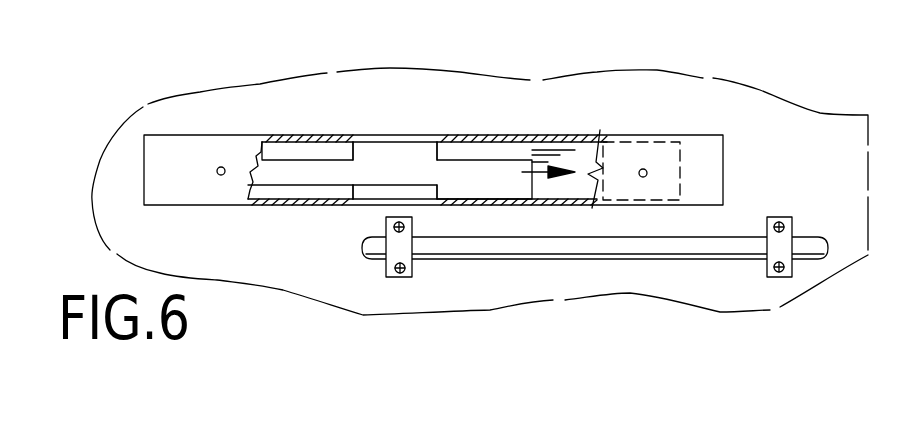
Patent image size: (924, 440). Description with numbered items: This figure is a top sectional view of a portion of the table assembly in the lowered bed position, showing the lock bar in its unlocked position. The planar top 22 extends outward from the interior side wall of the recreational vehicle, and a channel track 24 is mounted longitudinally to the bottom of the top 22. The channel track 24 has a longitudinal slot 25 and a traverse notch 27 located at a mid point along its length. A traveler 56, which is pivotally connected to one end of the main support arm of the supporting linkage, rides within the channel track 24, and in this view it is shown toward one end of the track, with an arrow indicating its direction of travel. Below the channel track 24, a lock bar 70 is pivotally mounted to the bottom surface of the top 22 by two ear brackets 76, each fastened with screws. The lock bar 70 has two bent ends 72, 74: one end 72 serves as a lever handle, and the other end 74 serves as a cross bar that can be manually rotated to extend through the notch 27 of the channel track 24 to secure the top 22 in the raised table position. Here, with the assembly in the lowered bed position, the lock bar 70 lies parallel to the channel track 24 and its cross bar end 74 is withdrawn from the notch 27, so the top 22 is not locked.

The planar top 22 is at (665, 100).
The channel track 24 is at (403, 137).
The longitudinal slot 25 is at (490, 172).
The traverse notch 27 is at (407, 188).
The traveler 56 is at (577, 165).
The lock bar 70 is at (608, 258).
The bent end (lever handle) 72 is at (795, 237).
The bent end (cross bar) 74 is at (362, 250).
The ear brackets 76 is at (405, 265).